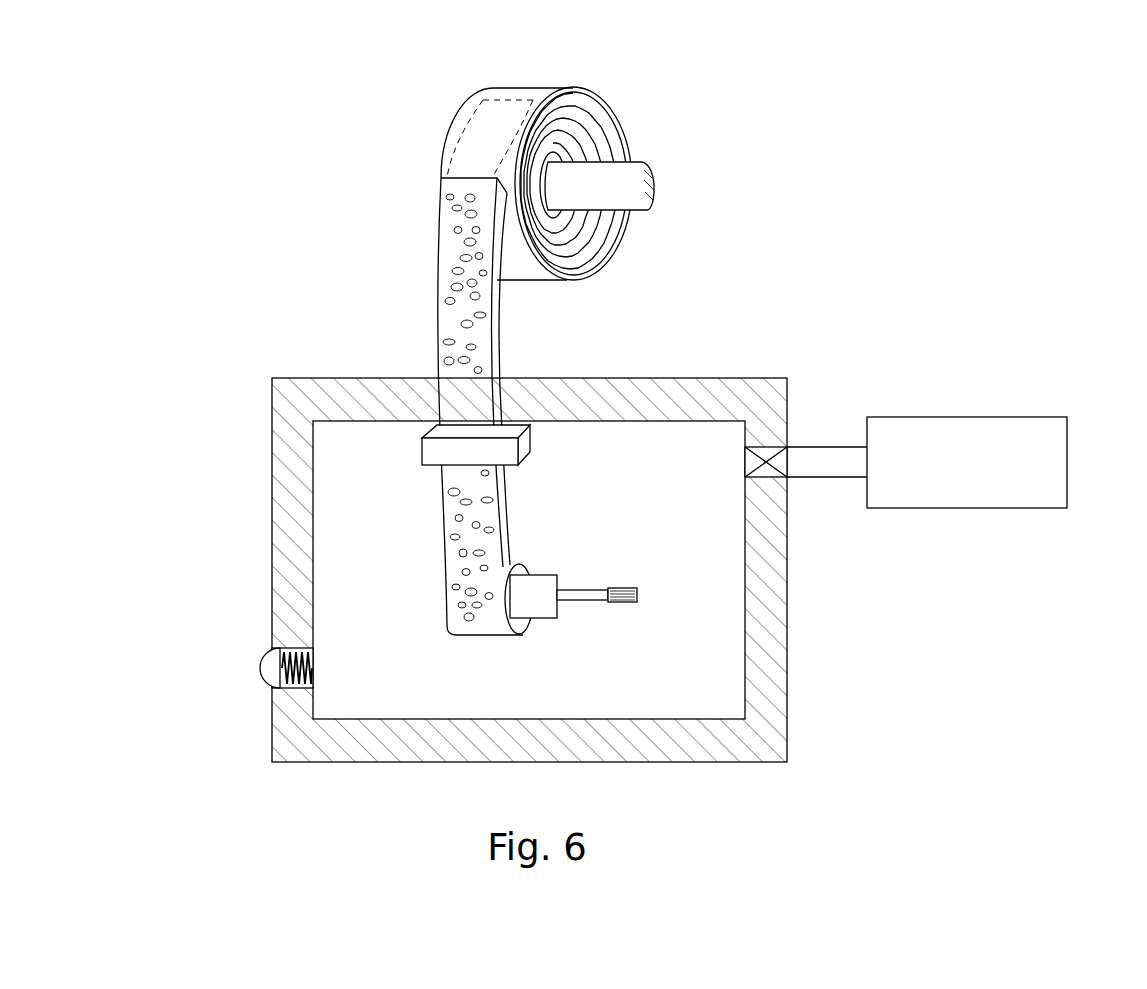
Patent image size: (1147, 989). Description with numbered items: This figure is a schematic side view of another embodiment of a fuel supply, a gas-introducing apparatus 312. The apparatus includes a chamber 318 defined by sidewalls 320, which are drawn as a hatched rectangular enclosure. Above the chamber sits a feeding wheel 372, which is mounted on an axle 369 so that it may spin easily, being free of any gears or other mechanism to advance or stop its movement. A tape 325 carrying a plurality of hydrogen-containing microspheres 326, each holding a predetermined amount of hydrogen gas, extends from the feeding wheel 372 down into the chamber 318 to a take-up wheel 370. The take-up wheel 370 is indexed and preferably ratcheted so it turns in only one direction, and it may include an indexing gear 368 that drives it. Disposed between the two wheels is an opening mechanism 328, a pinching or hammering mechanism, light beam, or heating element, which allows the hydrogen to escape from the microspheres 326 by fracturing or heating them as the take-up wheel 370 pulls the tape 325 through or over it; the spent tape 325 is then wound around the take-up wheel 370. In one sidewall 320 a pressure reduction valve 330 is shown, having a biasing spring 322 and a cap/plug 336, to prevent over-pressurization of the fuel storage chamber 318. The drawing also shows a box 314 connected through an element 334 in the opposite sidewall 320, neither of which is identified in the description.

The gas-introducing apparatus 312 is at (550, 598).
The controller 314 is at (1033, 438).
The chamber 318 is at (348, 453).
The sidewalls 320 is at (772, 608).
The biasing spring 322 is at (293, 687).
The tape 325 is at (492, 302).
The microspheres 326 is at (477, 406).
The opening mechanism 328 is at (525, 443).
The pressure reduction valve 330 is at (214, 684).
The sensor 334 is at (765, 453).
The cap/plug 336 is at (275, 672).
The indexing gear 368 is at (630, 603).
The axle 369 is at (622, 187).
The take-up wheel 370 is at (520, 562).
The feeding wheel 372 is at (600, 154).